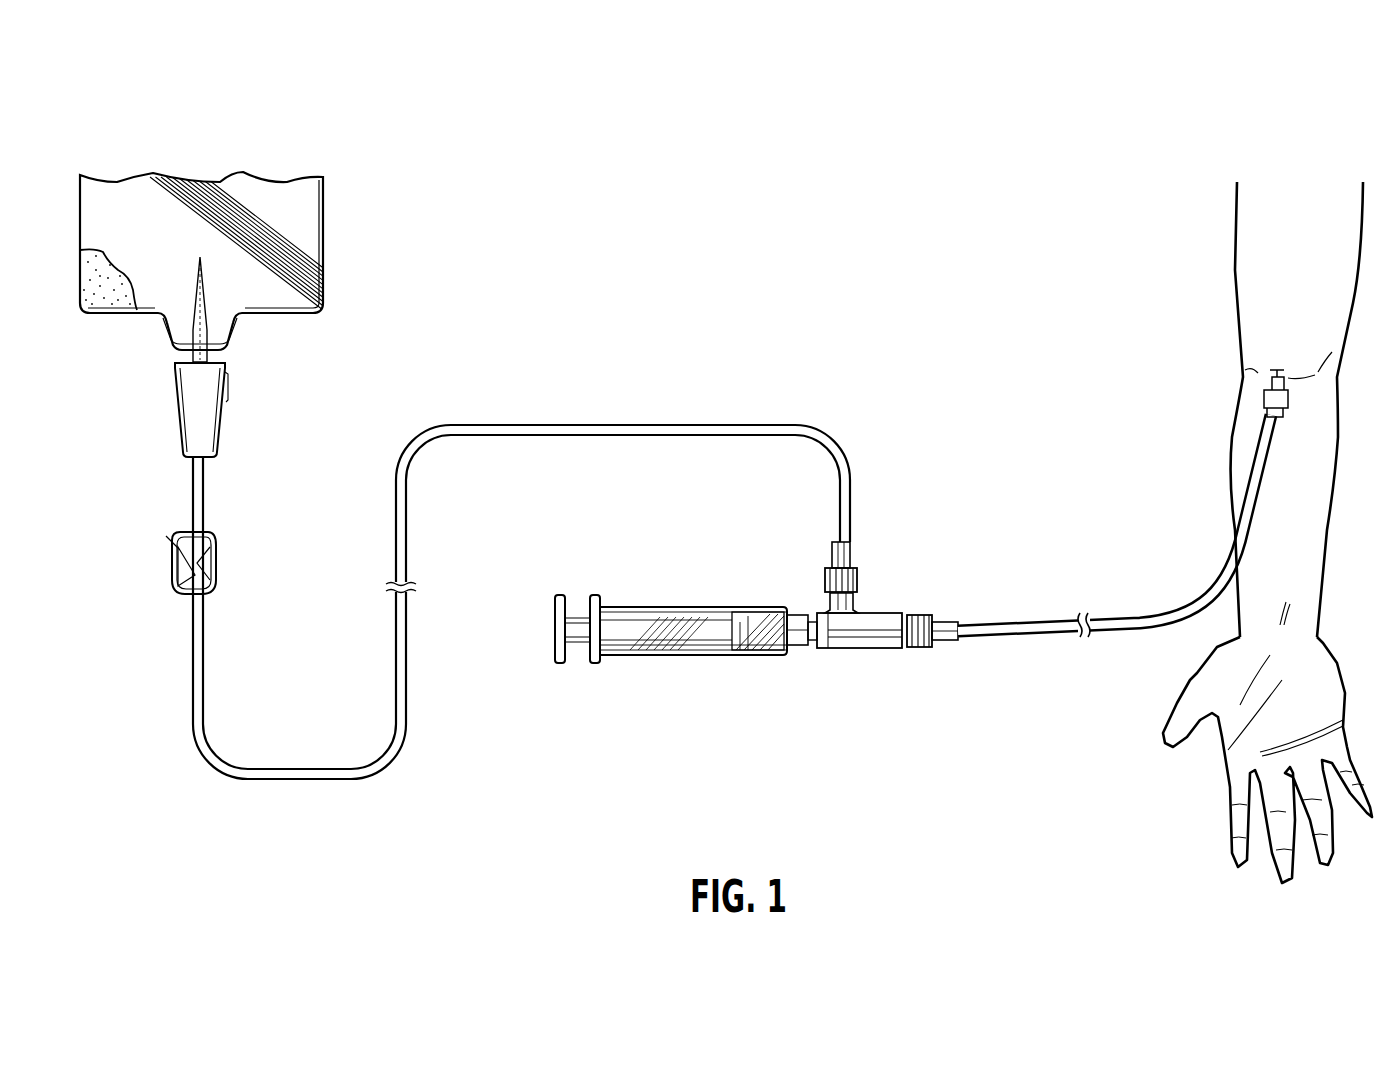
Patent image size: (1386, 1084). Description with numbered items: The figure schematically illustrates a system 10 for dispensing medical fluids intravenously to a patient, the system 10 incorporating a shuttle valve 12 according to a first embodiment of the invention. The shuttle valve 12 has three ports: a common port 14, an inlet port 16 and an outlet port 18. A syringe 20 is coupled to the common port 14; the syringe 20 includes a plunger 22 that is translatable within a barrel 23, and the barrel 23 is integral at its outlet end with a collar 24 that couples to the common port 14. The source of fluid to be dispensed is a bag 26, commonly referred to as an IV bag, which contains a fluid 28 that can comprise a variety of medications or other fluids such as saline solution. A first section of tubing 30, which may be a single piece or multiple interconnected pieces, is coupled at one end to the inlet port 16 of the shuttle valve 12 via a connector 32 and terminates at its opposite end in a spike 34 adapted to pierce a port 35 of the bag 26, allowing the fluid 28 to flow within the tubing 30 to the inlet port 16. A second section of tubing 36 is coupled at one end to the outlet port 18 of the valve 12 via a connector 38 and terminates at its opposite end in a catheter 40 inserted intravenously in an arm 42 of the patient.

The system 10 is at (879, 241).
The shuttle valve 12 is at (865, 644).
The common port 14 is at (813, 651).
The inlet port 16 is at (858, 606).
The outlet port 18 is at (905, 650).
The syringe 20 is at (663, 627).
The plunger 22 is at (560, 601).
The barrel 23 is at (660, 607).
The collar 24 is at (797, 613).
The bag 26 is at (327, 227).
The fluid 28 is at (114, 306).
The first section of tubing 30 is at (557, 425).
The connector 32 is at (857, 572).
The spike 34 is at (186, 366).
The port 35 is at (236, 347).
The second section of tubing 36 is at (1129, 616).
The connector 38 is at (945, 641).
The catheter 40 is at (1263, 398).
The arm 42 is at (1237, 298).